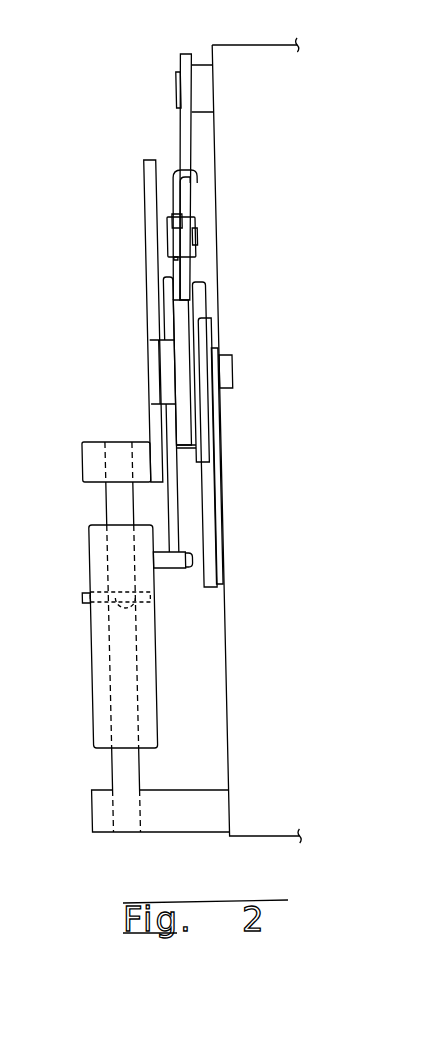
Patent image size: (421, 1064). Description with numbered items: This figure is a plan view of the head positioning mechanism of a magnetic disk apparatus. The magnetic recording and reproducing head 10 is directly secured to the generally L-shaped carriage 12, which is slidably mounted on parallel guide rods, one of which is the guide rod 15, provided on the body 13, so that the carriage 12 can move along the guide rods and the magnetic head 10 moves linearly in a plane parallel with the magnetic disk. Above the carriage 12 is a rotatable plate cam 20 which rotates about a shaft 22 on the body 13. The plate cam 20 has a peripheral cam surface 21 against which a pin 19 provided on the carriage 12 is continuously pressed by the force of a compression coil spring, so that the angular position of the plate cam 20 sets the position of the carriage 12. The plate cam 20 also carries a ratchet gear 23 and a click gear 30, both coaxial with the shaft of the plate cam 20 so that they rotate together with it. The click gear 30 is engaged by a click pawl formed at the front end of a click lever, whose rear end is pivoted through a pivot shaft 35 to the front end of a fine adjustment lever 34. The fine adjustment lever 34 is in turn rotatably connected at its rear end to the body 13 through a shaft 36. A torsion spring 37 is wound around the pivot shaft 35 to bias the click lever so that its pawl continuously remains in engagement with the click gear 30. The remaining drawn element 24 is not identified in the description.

The magnetic recording and reproducing head 10 is at (78, 598).
The carriage 12 is at (95, 716).
The body 13 is at (231, 790).
The guide rod 15 is at (124, 777).
The pin 19 is at (188, 563).
The plate cam 20 is at (171, 486).
The peripheral cam surface 21 is at (174, 569).
The shaft 22 is at (234, 360).
The ratchet gear 23 is at (204, 314).
The guide rail 24 is at (209, 518).
The click gear 30 is at (180, 318).
The fine adjustment lever 34 is at (194, 138).
The pivot shaft 35 is at (171, 238).
The shaft 36 is at (185, 93).
The torsion spring 37 is at (173, 192).